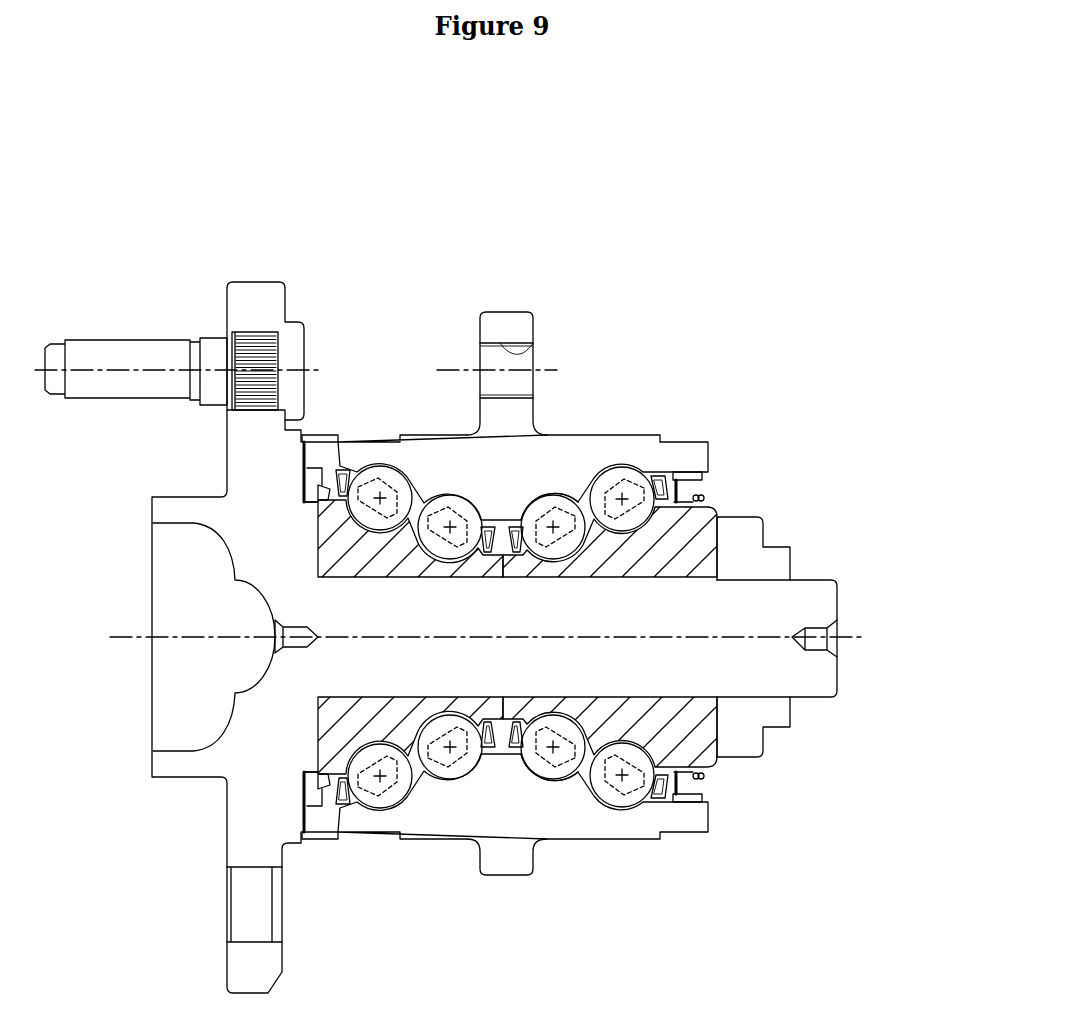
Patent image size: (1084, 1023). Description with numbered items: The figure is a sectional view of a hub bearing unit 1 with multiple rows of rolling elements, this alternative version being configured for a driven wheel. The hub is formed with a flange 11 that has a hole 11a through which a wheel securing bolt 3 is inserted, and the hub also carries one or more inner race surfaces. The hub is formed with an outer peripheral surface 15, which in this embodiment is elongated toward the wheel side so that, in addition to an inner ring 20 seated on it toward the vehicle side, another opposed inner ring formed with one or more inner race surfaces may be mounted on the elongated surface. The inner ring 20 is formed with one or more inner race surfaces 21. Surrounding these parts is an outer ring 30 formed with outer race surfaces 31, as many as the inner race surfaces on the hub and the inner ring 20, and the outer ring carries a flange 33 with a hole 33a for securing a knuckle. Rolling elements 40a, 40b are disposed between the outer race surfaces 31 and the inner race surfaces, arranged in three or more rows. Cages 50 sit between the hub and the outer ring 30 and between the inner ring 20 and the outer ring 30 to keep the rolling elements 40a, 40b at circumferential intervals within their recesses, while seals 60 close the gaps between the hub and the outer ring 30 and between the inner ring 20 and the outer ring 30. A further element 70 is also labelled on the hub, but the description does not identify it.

The hub bearing unit 1 is at (412, 187).
The wheel securing bolt 3 is at (98, 352).
The flange 11 is at (265, 307).
The hole 11a is at (236, 350).
The outer peripheral surface 15 is at (652, 580).
The inner ring 20 is at (347, 562).
The inner race surface 21 is at (690, 547).
The outer ring 30 is at (620, 458).
The outer race surface 31 is at (548, 490).
The flange 33 is at (504, 327).
The hole 33a is at (537, 343).
The rolling elements 40a is at (501, 527).
The rolling elements 40b is at (380, 475).
The cage 50 is at (652, 478).
The seal 60 is at (712, 477).
The stepped portion 70 is at (765, 563).